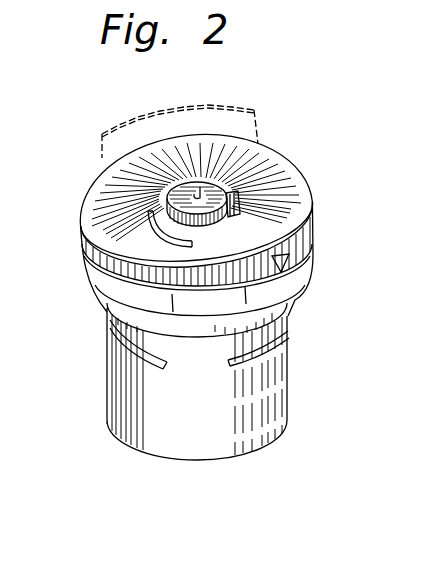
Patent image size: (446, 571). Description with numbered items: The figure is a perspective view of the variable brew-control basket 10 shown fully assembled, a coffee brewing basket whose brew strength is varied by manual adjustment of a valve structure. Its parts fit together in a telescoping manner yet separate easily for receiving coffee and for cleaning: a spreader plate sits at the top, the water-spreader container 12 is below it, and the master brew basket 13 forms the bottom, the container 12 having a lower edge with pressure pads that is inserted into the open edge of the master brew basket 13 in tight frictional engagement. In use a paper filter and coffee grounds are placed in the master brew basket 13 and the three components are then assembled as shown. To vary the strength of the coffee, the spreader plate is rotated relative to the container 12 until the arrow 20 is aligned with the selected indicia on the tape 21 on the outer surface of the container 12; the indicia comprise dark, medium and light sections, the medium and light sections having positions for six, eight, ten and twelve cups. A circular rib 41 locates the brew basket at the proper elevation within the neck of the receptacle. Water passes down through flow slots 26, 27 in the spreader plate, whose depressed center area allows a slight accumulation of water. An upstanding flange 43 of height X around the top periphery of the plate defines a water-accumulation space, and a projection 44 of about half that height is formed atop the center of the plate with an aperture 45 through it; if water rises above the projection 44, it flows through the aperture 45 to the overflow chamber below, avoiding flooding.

The variable brew-control basket 10 is at (214, 288).
The water-spreader container 12 is at (310, 277).
The master brew basket 13 is at (226, 446).
The arrow 20 is at (312, 236).
The tape 21 is at (297, 297).
The flow slot 26 is at (153, 218).
The flow slot 27 is at (242, 213).
The circular rib 41 is at (127, 347).
The upstanding flange 43 is at (132, 118).
The projection 44 is at (226, 193).
The aperture 45 is at (222, 170).